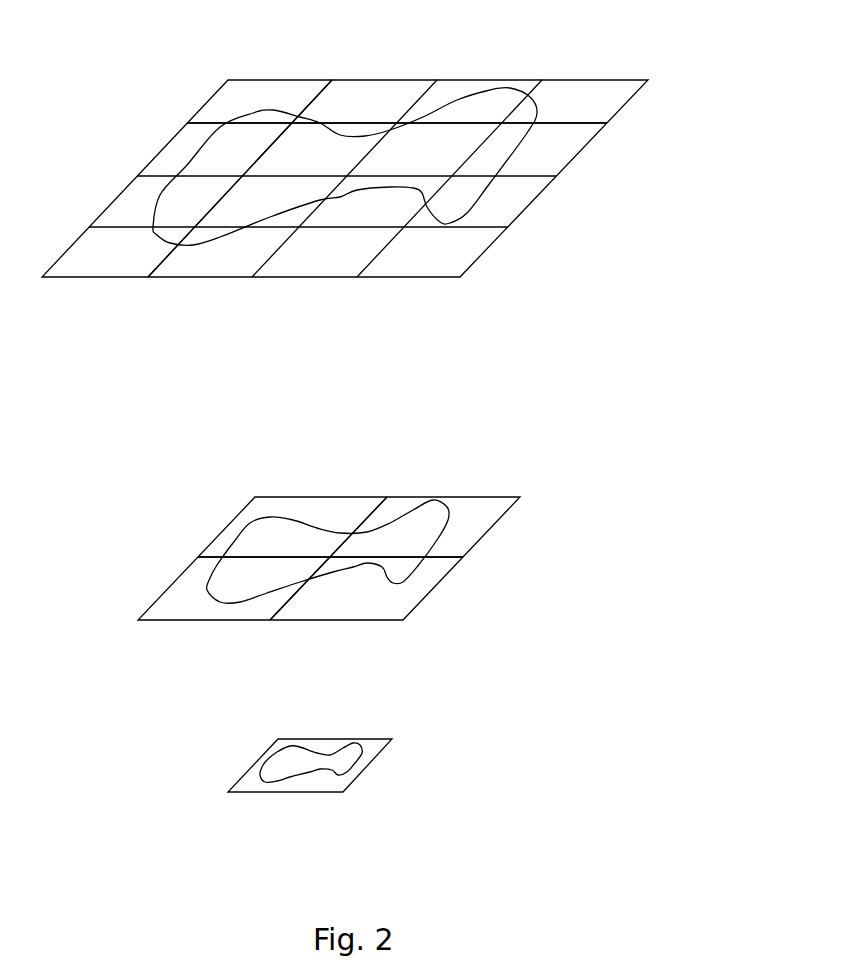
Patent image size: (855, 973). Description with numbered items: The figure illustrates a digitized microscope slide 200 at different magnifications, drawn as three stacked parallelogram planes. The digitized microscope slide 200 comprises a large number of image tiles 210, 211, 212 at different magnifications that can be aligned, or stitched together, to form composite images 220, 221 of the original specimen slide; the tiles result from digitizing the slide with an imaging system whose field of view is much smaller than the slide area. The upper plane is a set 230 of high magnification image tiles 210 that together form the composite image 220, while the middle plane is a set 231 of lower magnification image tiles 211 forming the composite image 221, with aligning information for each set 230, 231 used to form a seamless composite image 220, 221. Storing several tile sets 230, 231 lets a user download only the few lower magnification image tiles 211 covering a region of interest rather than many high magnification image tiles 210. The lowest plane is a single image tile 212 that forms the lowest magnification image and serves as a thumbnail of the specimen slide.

The digitized microscope slide 200 is at (662, 82).
The high magnification image tile 210 is at (477, 248).
The lower magnification image tile 211 is at (437, 572).
The single image tile 212 is at (370, 762).
The composite image 220 is at (392, 80).
The composite image 221 is at (357, 497).
The image tile set 230 is at (200, 78).
The image tile set 231 is at (240, 497).